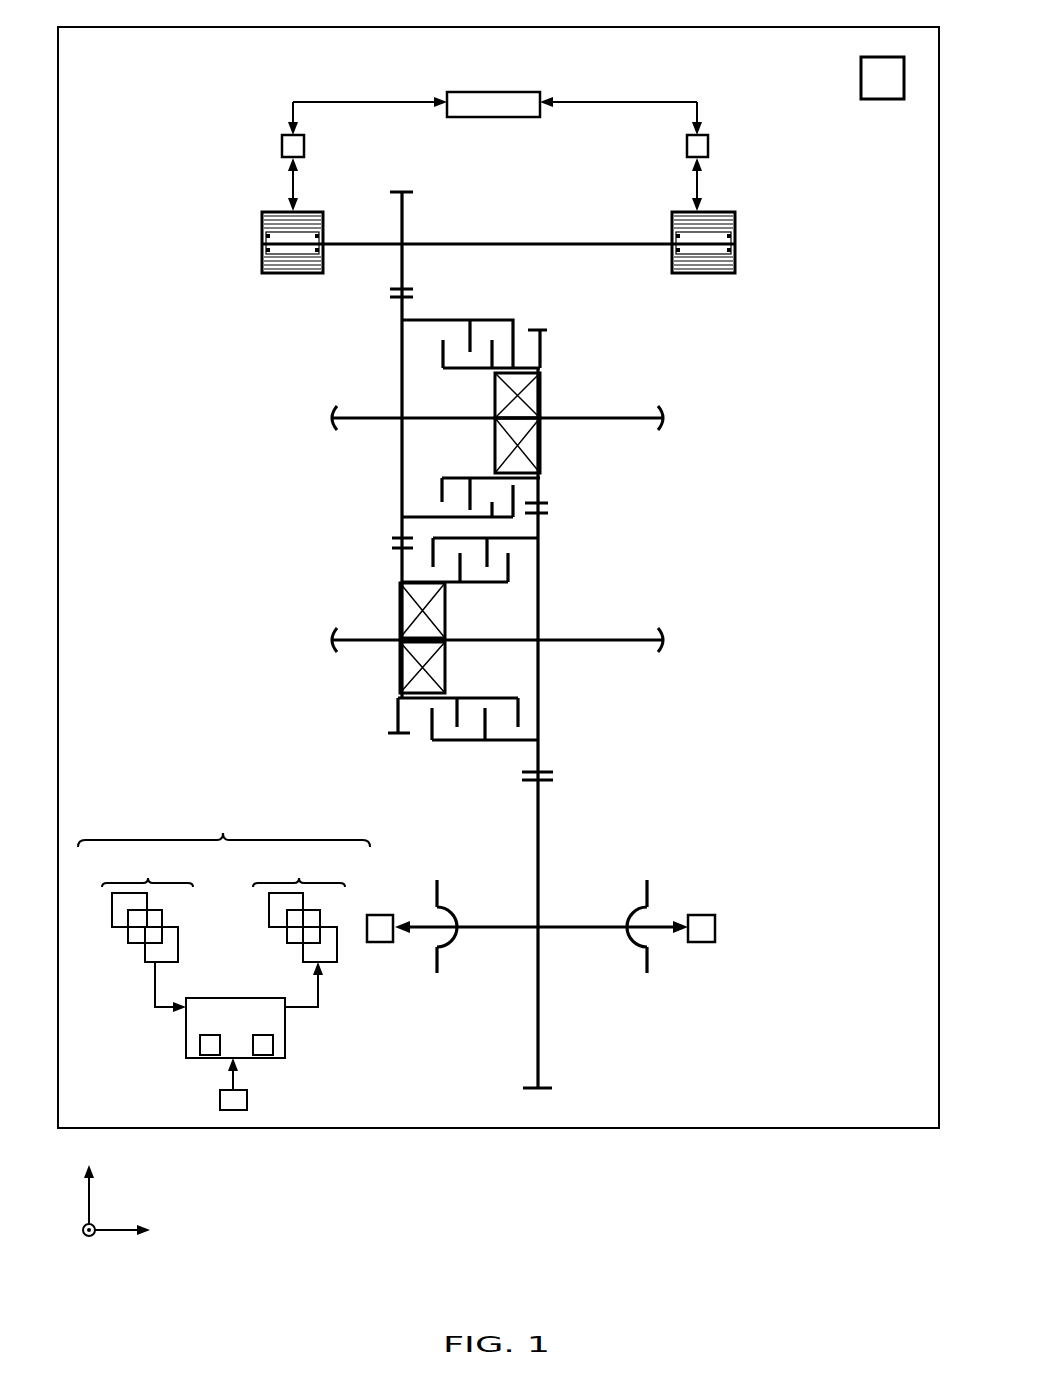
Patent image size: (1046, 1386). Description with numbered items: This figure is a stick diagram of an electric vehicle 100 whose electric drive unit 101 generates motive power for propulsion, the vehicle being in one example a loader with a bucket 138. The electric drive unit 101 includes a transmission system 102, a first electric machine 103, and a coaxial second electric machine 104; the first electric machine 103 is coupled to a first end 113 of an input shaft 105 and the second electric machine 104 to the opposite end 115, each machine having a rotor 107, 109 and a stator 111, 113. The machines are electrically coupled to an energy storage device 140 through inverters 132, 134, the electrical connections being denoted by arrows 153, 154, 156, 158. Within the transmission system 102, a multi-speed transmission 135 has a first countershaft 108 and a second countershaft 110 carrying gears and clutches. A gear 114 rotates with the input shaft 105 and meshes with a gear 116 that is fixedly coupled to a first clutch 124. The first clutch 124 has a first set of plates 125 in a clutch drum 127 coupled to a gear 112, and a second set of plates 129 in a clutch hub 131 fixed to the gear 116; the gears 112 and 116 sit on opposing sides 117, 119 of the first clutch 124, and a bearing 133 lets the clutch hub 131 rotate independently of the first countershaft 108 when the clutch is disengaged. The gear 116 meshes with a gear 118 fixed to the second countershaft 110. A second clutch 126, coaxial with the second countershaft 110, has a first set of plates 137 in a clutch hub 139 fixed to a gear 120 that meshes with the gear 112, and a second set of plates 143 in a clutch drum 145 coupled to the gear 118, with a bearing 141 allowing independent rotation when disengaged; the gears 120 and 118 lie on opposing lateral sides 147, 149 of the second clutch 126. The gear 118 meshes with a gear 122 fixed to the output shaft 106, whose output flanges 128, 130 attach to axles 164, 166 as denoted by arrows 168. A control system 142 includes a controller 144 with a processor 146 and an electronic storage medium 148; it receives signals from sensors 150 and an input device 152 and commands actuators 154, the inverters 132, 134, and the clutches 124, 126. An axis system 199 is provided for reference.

The electric vehicle 100 is at (61, 27).
The electric drive unit 101 is at (108, 71).
The transmission system 102 is at (158, 125).
The first electric machine 103 is at (243, 250).
The second electric machine 104 is at (766, 249).
The input shaft 105 is at (490, 243).
The output shaft 106 is at (547, 925).
The rotor 107 is at (293, 233).
The first countershaft 108 is at (388, 417).
The rotor 109 is at (708, 233).
The second countershaft 110 is at (590, 640).
The stator 111 is at (285, 268).
The gear 112 is at (390, 302).
The stator 113 is at (339, 257).
The gear 114 is at (402, 191).
The opposite end of input shaft 115 is at (659, 256).
The gear 116 is at (545, 327).
The side of first clutch 117 is at (372, 342).
The gear 118 is at (542, 752).
The side of first clutch 119 is at (565, 357).
The gear 120 is at (372, 551).
The gear 122 is at (542, 818).
The first clutch 124 is at (620, 341).
The first set of plates 125 is at (517, 329).
The second clutch 126 is at (367, 710).
The clutch drum 127 is at (475, 318).
The output flange 128 is at (452, 908).
The second set of plates 129 is at (443, 360).
The output flange 130 is at (643, 902).
The clutch hub 131 is at (461, 369).
The inverter 132 is at (282, 146).
The bearing 133 is at (545, 397).
The inverter 134 is at (708, 146).
The multi-speed transmission 135 is at (182, 299).
The first set of plates 137 is at (512, 583).
The bucket 138 is at (861, 78).
The clutch hub 139 is at (473, 583).
The energy storage device 140 is at (466, 92).
The bearing 141 is at (400, 669).
The control system 142 is at (223, 833).
The second set of plates 143 is at (490, 546).
The controller 144 is at (250, 1030).
The clutch drum 145 is at (514, 536).
The processor 146 is at (200, 1045).
The lateral side of second clutch 147 is at (369, 574).
The electronic storage medium 148 is at (273, 1045).
The lateral side of second clutch 149 is at (635, 556).
The sensors 150 is at (148, 878).
The input device 152 is at (248, 1100).
The arrow 153 is at (292, 183).
The actuators 154 is at (700, 184).
The arrow 156 is at (336, 101).
The arrow 158 is at (590, 101).
The axle 164 is at (382, 943).
The axle 166 is at (705, 943).
The arrows 168 is at (419, 925).
The axis system 199 is at (157, 1183).